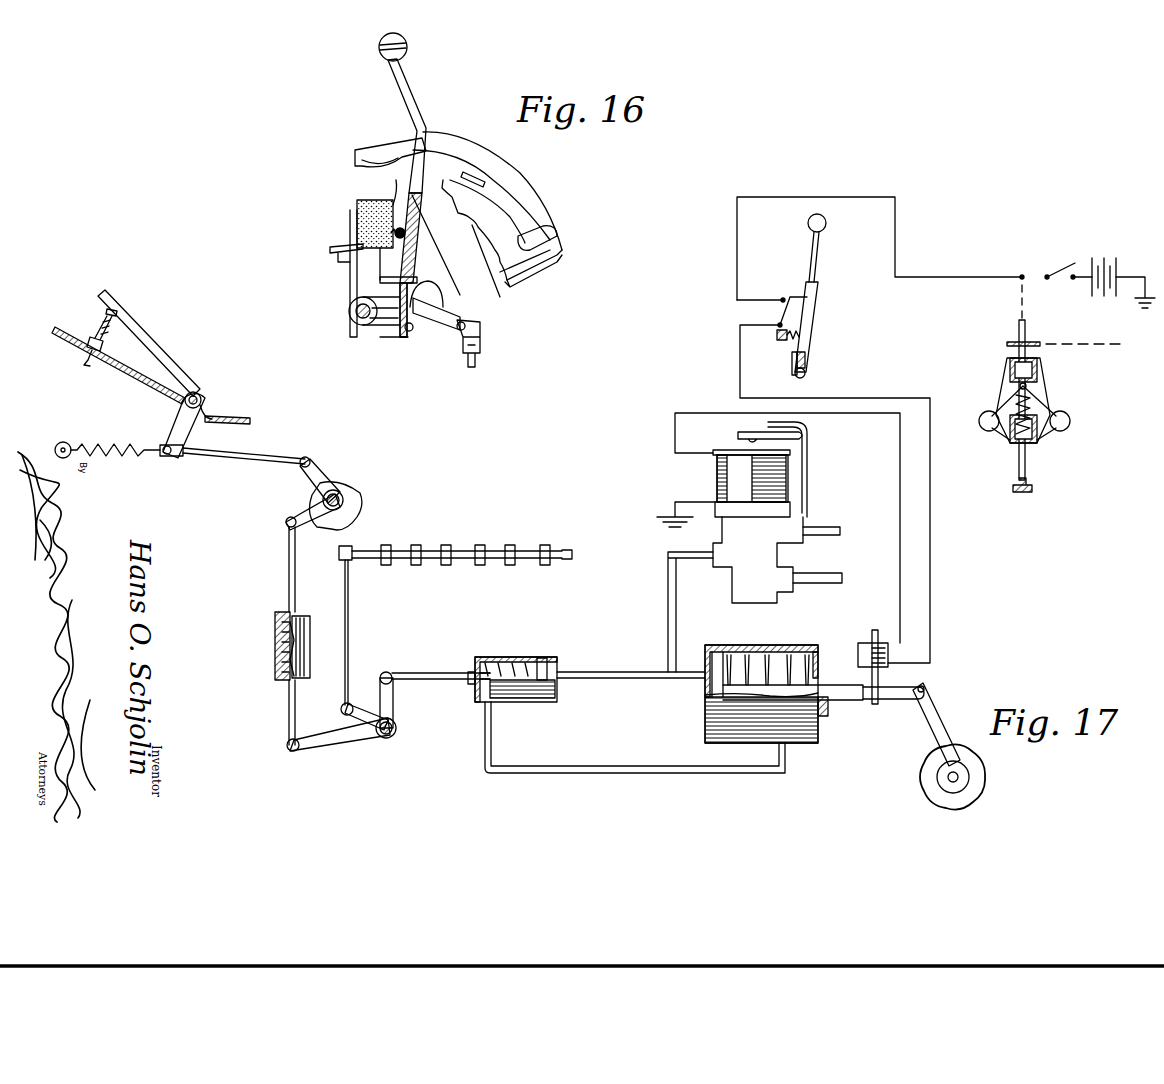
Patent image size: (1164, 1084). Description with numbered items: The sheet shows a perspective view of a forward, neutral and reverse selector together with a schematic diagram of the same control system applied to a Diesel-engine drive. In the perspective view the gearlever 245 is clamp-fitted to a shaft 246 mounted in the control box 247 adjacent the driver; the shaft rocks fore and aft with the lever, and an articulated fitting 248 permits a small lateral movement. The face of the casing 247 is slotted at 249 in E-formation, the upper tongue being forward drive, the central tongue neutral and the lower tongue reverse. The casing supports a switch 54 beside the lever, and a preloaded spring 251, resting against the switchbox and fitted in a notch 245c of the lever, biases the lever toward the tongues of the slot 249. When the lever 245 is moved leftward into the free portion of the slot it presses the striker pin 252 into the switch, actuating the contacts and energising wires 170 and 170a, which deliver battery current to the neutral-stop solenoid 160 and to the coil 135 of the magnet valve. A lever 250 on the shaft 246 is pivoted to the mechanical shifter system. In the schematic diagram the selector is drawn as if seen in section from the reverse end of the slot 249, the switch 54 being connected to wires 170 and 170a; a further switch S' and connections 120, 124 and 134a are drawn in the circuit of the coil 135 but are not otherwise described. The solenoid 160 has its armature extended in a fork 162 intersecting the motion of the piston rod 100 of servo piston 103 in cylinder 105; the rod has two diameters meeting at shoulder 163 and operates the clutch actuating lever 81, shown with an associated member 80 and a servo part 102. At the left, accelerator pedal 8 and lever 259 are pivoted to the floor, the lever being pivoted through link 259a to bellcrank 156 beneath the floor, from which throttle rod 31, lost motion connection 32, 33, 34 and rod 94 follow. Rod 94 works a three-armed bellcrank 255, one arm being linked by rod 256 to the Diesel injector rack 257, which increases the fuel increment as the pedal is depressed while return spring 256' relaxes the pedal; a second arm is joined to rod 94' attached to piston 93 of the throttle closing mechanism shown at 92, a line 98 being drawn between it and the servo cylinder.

In FIG. 17, the accelerator pedal 8 is at (175, 348).
In FIG. 17, the throttle rod 31 is at (288, 590).
In FIG. 17, the lost motion connection 32 is at (306, 618).
In FIG. 17, the lost motion connection 33 is at (296, 640).
In FIG. 17, the lost motion connection 34 is at (282, 650).
In FIG. 16, the switch 54 is at (370, 203).
In FIG. 17, the switch 54 is at (783, 300).
In FIG. 17, the throttle wheel 80 is at (937, 777).
In FIG. 17, the clutch actuating lever 81 is at (940, 720).
In FIG. 17, the valve casing 92 is at (514, 657).
In FIG. 17, the piston 93 is at (544, 658).
In FIG. 17, the rod 94 is at (274, 715).
In FIG. 17, the rod 94' is at (441, 662).
In FIG. 17, the conduit 98 is at (560, 772).
In FIG. 17, the piston rod 100 is at (840, 686).
In FIG. 17, the piston 102 is at (792, 655).
In FIG. 17, the servo piston 103 is at (720, 652).
In FIG. 17, the cylinder 105 is at (705, 718).
In FIG. 17, the terminal 120 is at (820, 575).
In FIG. 17, the conduit 124 is at (658, 668).
In FIG. 17, the terminal 134a is at (820, 528).
In FIG. 17, the coil of magnet valve 135 is at (720, 480).
In FIG. 17, the bellcrank 156 is at (330, 478).
In FIG. 17, the neutral-stop solenoid 160 is at (890, 654).
In FIG. 17, the fork 162 is at (880, 700).
In FIG. 17, the shoulder 163 is at (848, 722).
In FIG. 16, the wire 170 is at (340, 245).
In FIG. 17, the wire 170 is at (984, 278).
In FIG. 16, the wire 170a is at (345, 256).
In FIG. 17, the wire 170a is at (738, 345).
In FIG. 16, the gearlever 245 is at (416, 238).
In FIG. 17, the gearlever 245 is at (810, 328).
In FIG. 16, the notch 245c is at (385, 279).
In FIG. 16, the shaft 246 is at (349, 312).
In FIG. 17, the shaft 246 is at (808, 370).
In FIG. 16, the control box 247 is at (383, 152).
In FIG. 16, the fitting 248 is at (388, 333).
In FIG. 16, the slot 249 is at (505, 210).
In FIG. 16, the lever 250 is at (440, 330).
In FIG. 16, the preloaded spring 251 is at (406, 230).
In FIG. 17, the preloaded spring 251 is at (789, 340).
In FIG. 16, the striker pin 252 is at (397, 196).
In FIG. 17, the three-armed bellcrank 255 is at (336, 742).
In FIG. 17, the rod 256 is at (369, 632).
In FIG. 17, the return spring 256' is at (119, 461).
In FIG. 17, the injector rack 257 is at (352, 560).
In FIG. 17, the lever 259 is at (172, 420).
In FIG. 17, the link rod 259a is at (255, 462).
In FIG. 17, the switch S' is at (1087, 272).